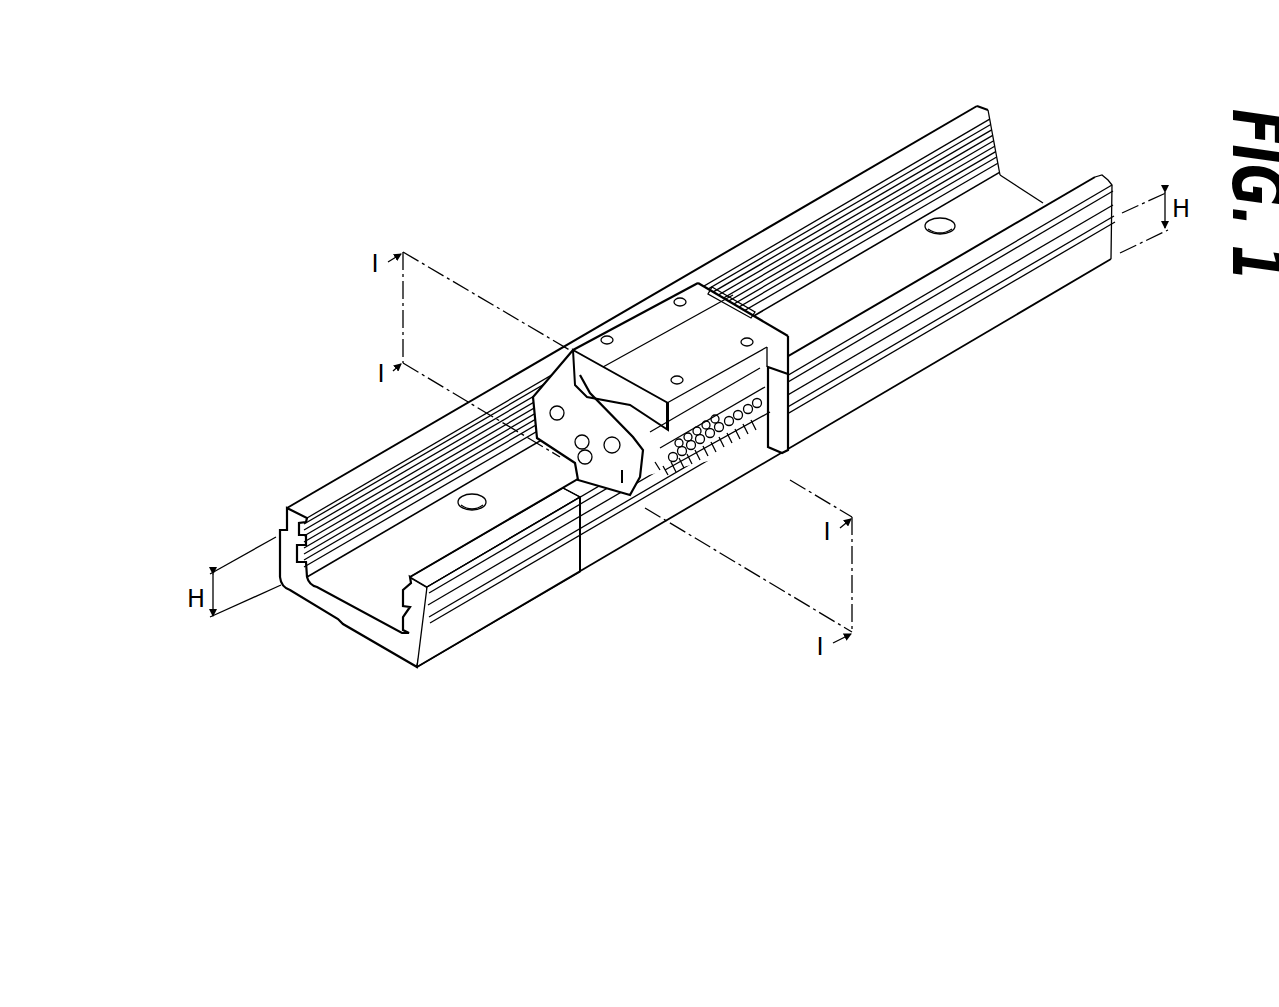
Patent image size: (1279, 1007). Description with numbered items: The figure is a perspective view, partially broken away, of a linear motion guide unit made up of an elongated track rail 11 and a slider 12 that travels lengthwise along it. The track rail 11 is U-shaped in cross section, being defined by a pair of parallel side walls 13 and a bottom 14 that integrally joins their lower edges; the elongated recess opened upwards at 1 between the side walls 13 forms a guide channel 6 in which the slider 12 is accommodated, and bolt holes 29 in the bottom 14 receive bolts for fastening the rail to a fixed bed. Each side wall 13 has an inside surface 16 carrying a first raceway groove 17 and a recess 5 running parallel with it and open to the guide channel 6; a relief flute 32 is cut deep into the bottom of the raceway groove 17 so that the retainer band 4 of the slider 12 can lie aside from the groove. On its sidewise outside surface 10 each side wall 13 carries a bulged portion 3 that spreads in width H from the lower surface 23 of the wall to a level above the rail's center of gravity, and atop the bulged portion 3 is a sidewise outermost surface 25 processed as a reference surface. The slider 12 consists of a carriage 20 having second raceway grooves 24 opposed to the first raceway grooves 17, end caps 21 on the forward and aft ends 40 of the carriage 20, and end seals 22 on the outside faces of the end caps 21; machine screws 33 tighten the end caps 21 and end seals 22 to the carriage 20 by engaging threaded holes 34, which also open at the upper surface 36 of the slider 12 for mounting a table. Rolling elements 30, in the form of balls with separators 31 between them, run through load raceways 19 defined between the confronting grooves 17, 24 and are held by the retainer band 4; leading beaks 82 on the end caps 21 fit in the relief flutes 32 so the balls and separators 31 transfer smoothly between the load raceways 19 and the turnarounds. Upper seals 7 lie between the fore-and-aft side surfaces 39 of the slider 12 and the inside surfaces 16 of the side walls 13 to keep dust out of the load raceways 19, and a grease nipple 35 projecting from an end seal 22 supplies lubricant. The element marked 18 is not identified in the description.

The upward opening of elongated recess 1 is at (482, 618).
The bulged portion 3 is at (280, 582).
The retainer band 4 is at (668, 465).
The recess 5 is at (409, 470).
The guide channel 6 is at (506, 488).
The upper seal 7 is at (768, 450).
The sidewise outside surface 10 is at (1000, 334).
The track rail 11 is at (934, 347).
The slider 12 is at (650, 316).
The side walls 13 is at (985, 105).
The bottom 14 is at (363, 625).
The inside surfaces 16 is at (343, 503).
The first raceway grooves 17 is at (858, 228).
The top surface of track rail 18 is at (870, 150).
The load raceway 19 is at (838, 440).
The carriage 20 is at (645, 345).
The end caps 21 is at (660, 508).
The end seals 22 is at (651, 505).
The lower surface 23 is at (377, 645).
The second raceway grooves 24 is at (790, 478).
The sidewise outermost surface 25 is at (277, 538).
The bolt holes 29 is at (938, 219).
The rolling elements 30 is at (690, 460).
The separator 31 is at (774, 452).
The relief flute 32 is at (816, 250).
The machine screws 33 is at (565, 378).
The threaded holes 34 is at (603, 345).
The grease nipple 35 is at (603, 532).
The upper surface 36 is at (700, 322).
The fore-and-aft side surfaces 39 is at (734, 286).
The forward and aft ends 40 is at (572, 350).
The leading beaks 82 is at (645, 512).